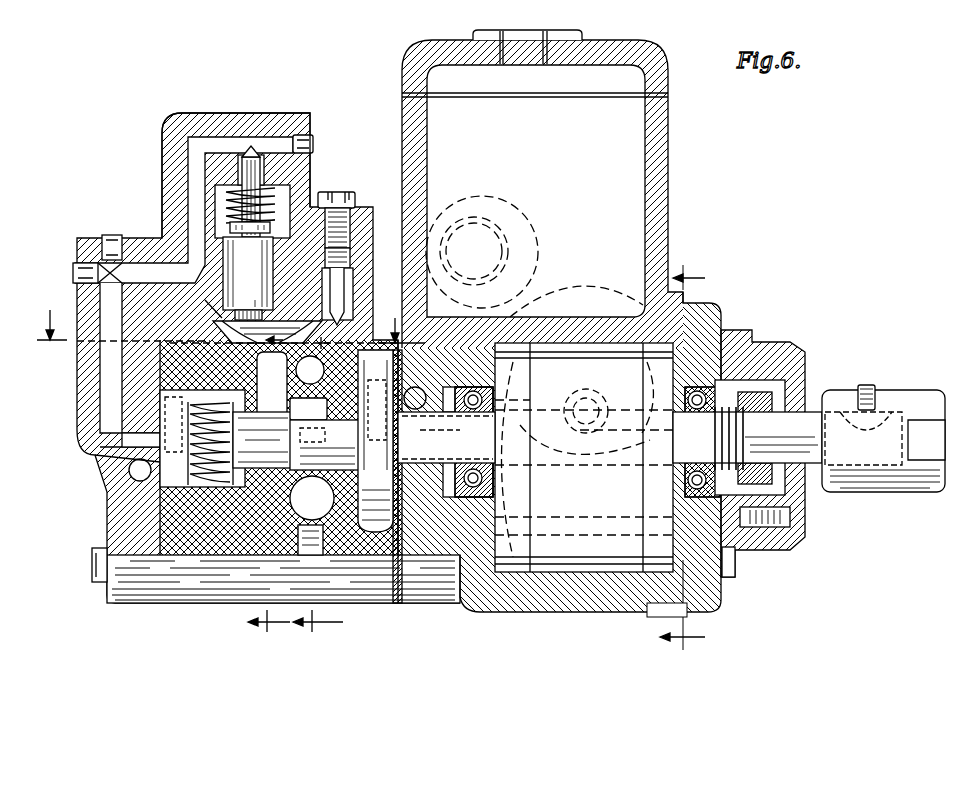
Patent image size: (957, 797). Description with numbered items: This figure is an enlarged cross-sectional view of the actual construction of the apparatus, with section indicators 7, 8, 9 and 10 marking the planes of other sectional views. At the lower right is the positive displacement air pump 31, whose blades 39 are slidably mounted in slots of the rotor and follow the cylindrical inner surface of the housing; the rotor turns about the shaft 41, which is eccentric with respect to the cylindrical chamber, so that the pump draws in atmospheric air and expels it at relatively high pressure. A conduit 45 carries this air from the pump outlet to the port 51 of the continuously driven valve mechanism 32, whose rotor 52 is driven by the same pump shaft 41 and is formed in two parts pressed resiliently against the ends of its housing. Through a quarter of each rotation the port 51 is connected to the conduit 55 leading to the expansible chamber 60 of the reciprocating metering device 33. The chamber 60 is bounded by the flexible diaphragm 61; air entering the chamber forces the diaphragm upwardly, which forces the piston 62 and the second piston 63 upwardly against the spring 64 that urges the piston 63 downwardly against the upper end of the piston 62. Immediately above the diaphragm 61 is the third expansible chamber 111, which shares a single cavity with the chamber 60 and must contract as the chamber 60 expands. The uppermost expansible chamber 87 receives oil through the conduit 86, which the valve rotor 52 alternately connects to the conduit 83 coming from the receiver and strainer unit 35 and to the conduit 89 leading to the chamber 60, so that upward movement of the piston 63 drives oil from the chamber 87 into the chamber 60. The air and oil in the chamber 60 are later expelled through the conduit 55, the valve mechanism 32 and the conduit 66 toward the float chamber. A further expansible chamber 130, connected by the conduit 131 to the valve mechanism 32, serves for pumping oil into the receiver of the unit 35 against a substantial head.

The section line 7- 7 is at (691, 459).
The section line 8- 8 is at (320, 484).
The section line 9- 9 is at (272, 482).
The section line 10- 10 is at (231, 323).
The air pump 31 is at (512, 615).
The valve mechanism 32 is at (103, 503).
The metering device 33 is at (162, 167).
The receiver and strainer unit 35 is at (664, 184).
The blades 39 is at (623, 552).
The shaft 41 is at (436, 455).
The conduit 45 is at (318, 376).
The port 51 is at (280, 433).
The rotor 52 is at (341, 441).
The conduit 55 is at (279, 383).
The expansible chamber 60 is at (192, 343).
The flexible diaphragm 61 is at (298, 332).
The piston 62 is at (250, 281).
The second piston 63 is at (281, 165).
The spring 64 is at (228, 203).
The conduit 66 is at (322, 509).
The conduit 83 is at (130, 472).
The conduit 86 is at (110, 300).
The expansible chamber 87 is at (253, 150).
The conduit 89 is at (157, 380).
The third expansible chamber 111 is at (213, 310).
The expansible chamber 130 is at (276, 197).
The conduit 131 is at (345, 312).